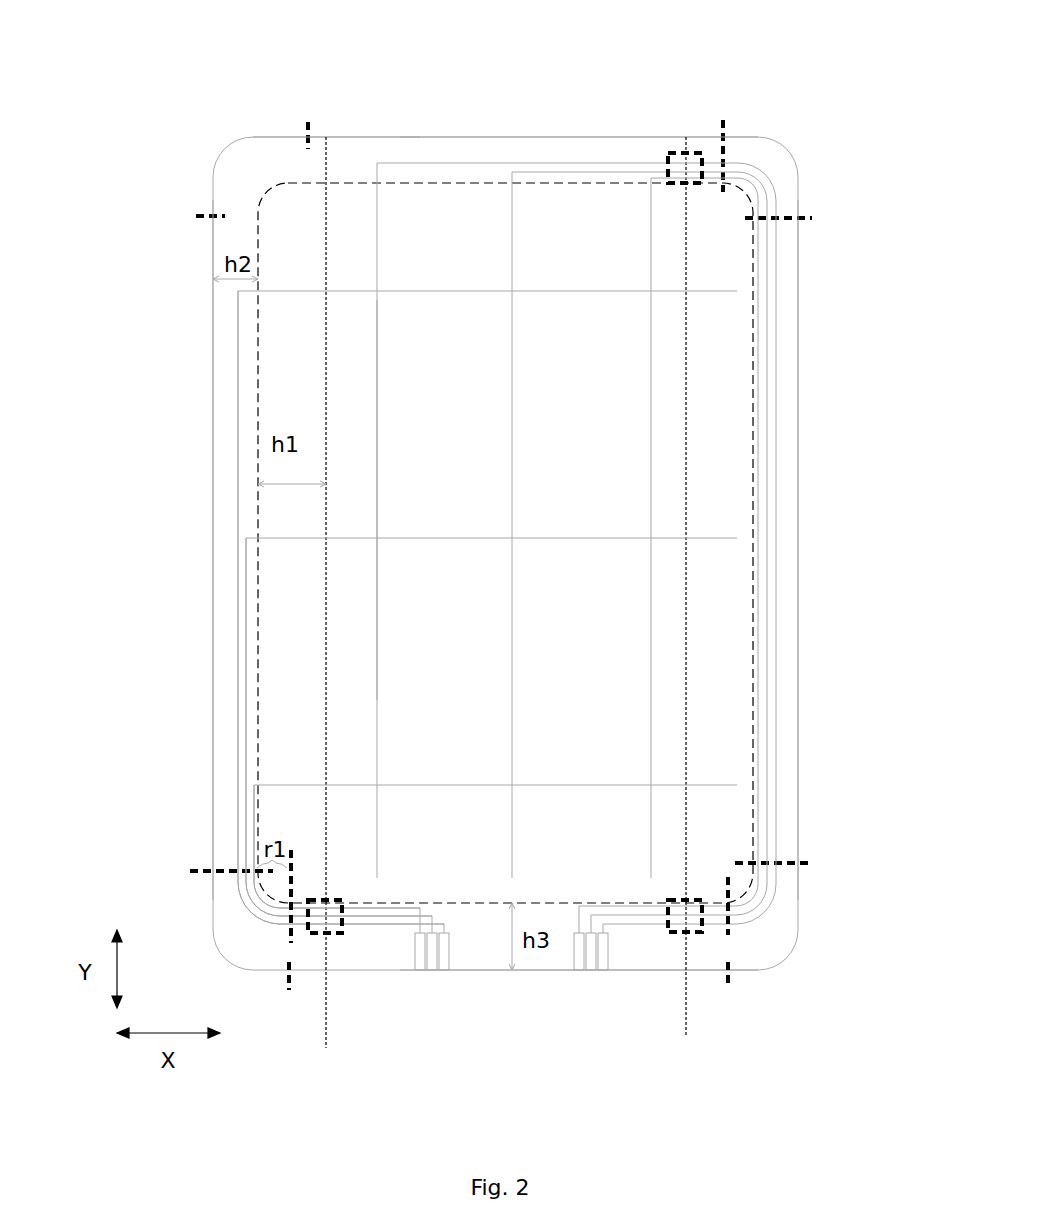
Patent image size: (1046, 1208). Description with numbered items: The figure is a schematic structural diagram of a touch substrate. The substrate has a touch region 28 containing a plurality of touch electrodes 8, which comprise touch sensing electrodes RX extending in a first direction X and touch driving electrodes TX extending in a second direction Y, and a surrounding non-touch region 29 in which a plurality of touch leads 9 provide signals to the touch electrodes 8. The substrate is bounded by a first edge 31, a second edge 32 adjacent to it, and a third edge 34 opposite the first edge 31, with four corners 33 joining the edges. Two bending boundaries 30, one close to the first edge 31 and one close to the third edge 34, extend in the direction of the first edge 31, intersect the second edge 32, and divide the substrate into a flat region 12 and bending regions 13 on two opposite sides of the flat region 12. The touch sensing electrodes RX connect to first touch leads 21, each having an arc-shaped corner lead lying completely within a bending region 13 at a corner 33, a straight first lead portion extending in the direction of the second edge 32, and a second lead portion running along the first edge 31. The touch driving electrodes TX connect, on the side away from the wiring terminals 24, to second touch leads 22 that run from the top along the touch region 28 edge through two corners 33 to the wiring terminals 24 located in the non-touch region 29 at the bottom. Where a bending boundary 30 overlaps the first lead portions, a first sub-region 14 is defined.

The touch electrode 8 is at (512, 220).
The touch lead 9 is at (270, 659).
The flat region 12 is at (602, 988).
The bending region 13 is at (295, 1025).
The first sub-region 14 is at (337, 933).
The first touch lead 21 is at (238, 829).
The second touch lead 22 is at (593, 579).
The wiring terminal 24 is at (448, 958).
The touch region 28 is at (449, 203).
The non-touch region 29 is at (353, 157).
The bending boundary 30 is at (326, 360).
The first edge 31 is at (213, 527).
The second edge 32 is at (432, 137).
The corner 33 is at (225, 146).
The third edge 34 is at (798, 538).